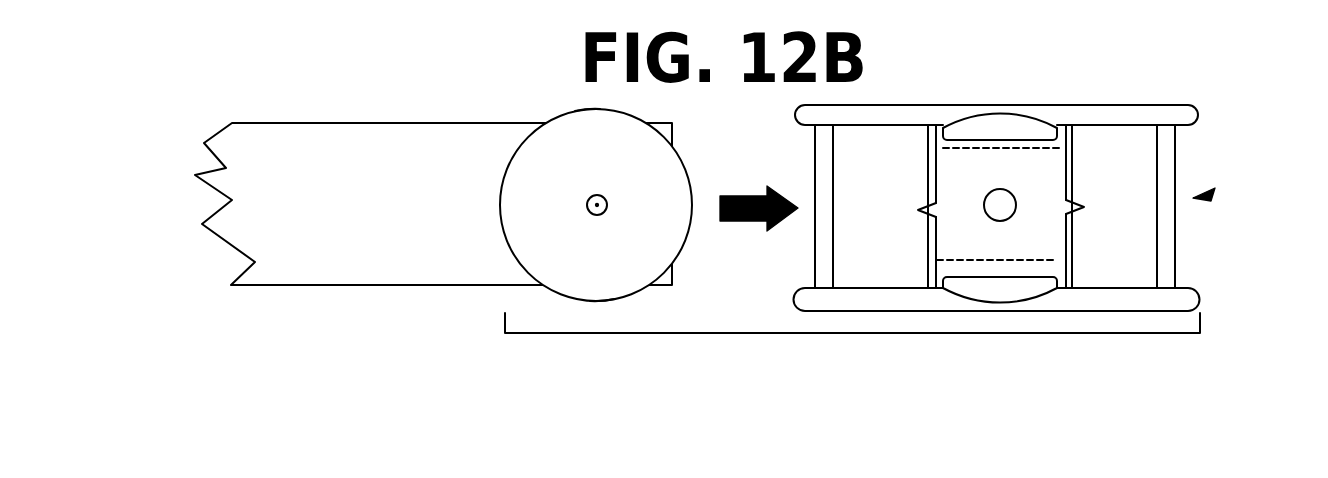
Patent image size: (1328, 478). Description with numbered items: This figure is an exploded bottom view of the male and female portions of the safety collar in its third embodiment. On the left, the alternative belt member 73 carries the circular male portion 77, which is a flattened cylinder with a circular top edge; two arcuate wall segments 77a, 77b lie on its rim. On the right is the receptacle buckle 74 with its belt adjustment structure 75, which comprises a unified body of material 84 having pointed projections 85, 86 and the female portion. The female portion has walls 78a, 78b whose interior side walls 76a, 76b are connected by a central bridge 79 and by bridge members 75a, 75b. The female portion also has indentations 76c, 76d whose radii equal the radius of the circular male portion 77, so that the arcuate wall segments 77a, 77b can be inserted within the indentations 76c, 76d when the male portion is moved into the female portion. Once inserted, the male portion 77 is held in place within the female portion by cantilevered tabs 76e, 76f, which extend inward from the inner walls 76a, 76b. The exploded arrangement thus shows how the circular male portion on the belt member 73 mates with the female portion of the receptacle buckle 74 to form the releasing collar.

The alternative belt member 73 is at (420, 140).
The receptacle buckle 74 is at (752, 334).
The belt adjustment structure 75 is at (1168, 158).
The bridge member 75a is at (822, 247).
The bridge member 75b is at (1168, 252).
The interior side wall 76a is at (937, 282).
The interior side wall 76b is at (937, 135).
The indentation 76c is at (1007, 305).
The indentation 76d is at (1025, 113).
The cantilevered tab 76e is at (1055, 273).
The cantilevered tab 76f is at (968, 146).
The male portion 77 is at (650, 173).
The arcuate wall segment 77a is at (603, 303).
The arcuate wall segment 77b is at (587, 109).
The wall 78a is at (1083, 303).
The wall 78b is at (1095, 103).
The central bridge 79 is at (1062, 148).
The unified body of material 84 is at (1212, 196).
The pointed projection 85 is at (925, 207).
The pointed projection 86 is at (1076, 203).